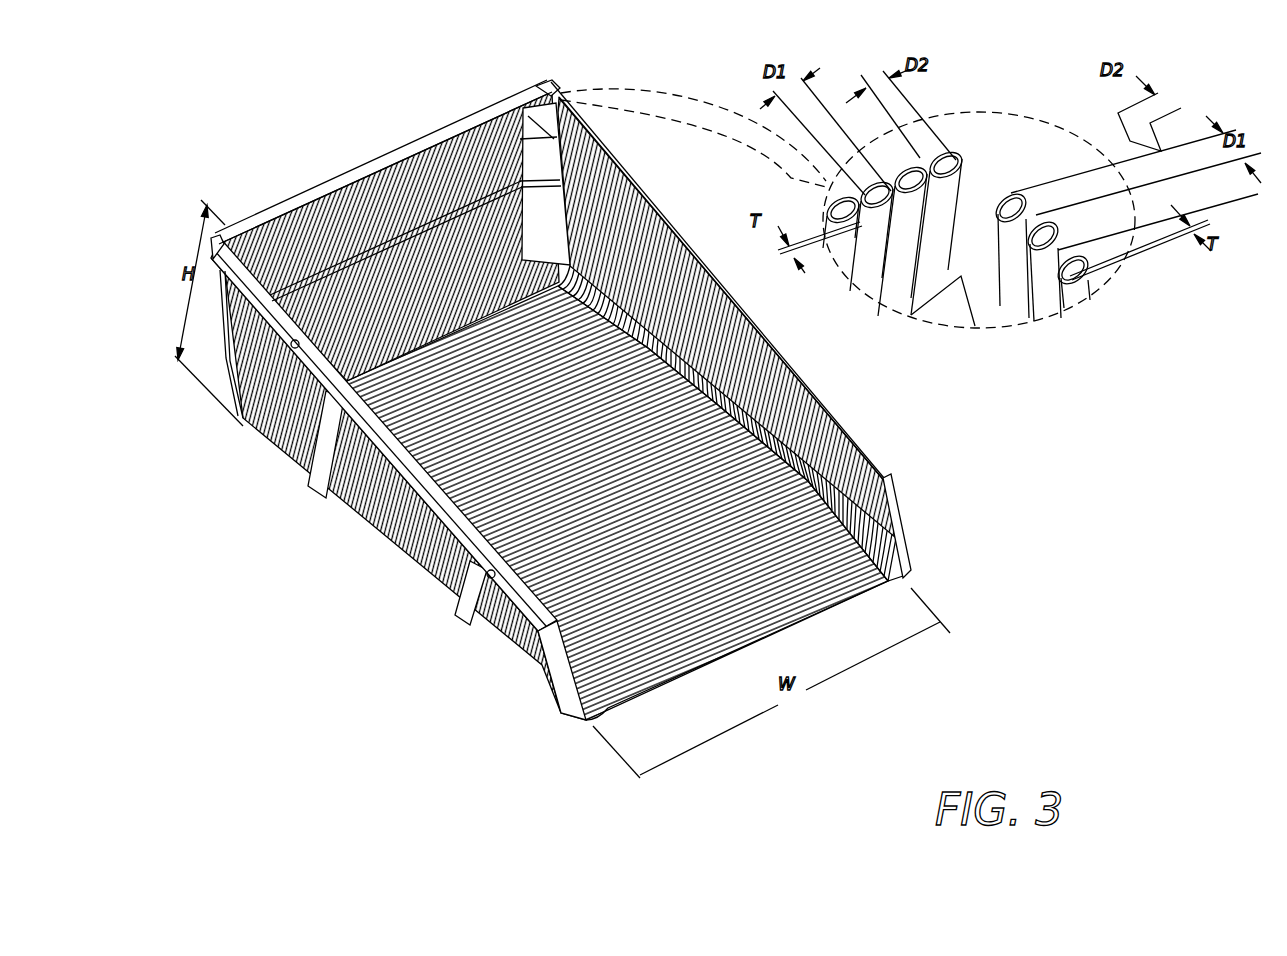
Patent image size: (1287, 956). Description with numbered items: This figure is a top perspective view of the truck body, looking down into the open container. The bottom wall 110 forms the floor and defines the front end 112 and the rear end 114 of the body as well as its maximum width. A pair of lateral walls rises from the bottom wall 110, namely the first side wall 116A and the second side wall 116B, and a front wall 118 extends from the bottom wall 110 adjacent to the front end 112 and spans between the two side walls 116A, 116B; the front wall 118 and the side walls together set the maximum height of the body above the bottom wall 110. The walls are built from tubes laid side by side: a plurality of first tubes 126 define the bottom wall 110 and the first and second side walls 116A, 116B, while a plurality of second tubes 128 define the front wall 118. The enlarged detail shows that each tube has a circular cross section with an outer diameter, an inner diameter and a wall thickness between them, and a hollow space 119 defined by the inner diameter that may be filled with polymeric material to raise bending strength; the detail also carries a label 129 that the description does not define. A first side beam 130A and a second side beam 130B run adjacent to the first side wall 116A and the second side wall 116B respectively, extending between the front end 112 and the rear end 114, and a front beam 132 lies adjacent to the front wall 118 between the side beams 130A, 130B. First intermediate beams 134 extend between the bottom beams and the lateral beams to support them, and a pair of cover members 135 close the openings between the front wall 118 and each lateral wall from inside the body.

The bottom wall 110 is at (638, 664).
The front end 112 is at (218, 422).
The rear end 114 is at (766, 638).
The first side wall 116A is at (795, 412).
The second side wall 116B is at (268, 403).
The front wall 118 is at (343, 167).
The hollow space 119 is at (828, 198).
The first tubes 126 is at (810, 612).
The second tubes 128 is at (435, 123).
The gap between rods 129 is at (978, 190).
The first side beam 130A is at (858, 432).
The second side beam 130B is at (223, 240).
The front beam 132 is at (385, 142).
The first intermediate beams 134 is at (328, 463).
The cover members 135 is at (232, 285).